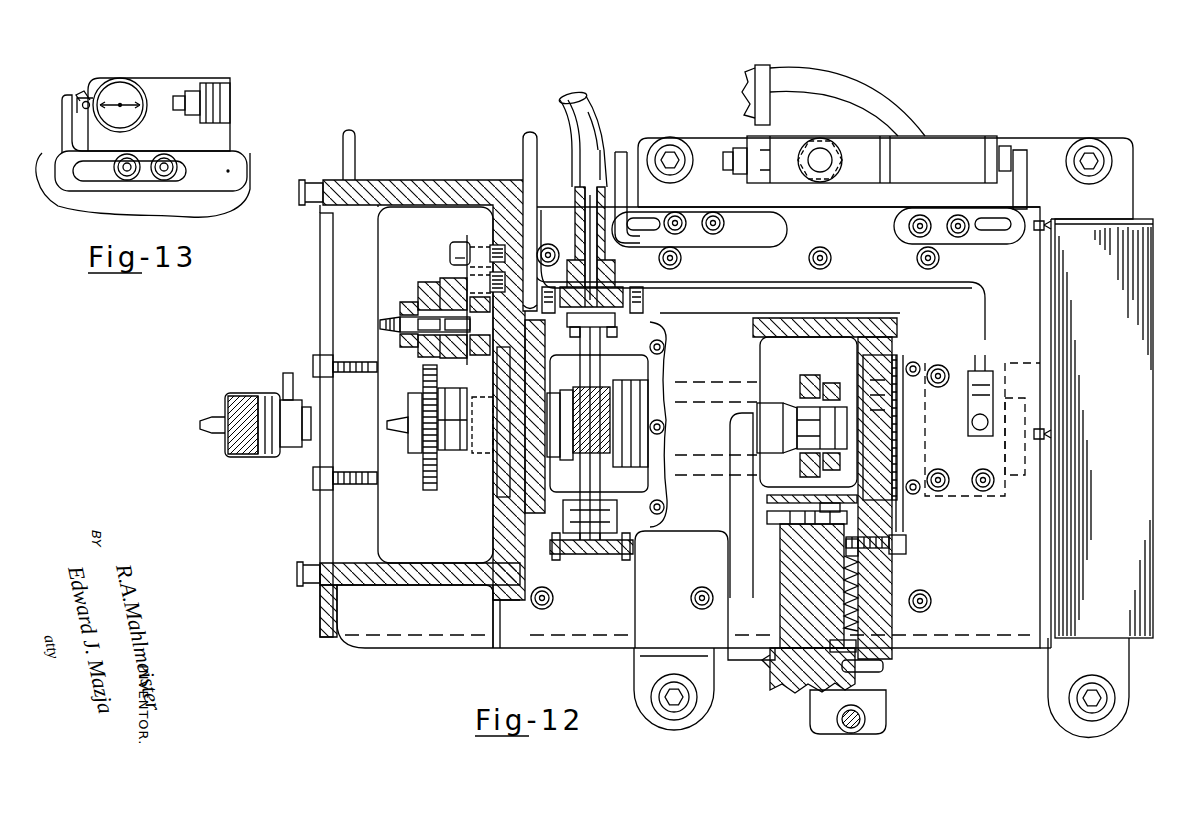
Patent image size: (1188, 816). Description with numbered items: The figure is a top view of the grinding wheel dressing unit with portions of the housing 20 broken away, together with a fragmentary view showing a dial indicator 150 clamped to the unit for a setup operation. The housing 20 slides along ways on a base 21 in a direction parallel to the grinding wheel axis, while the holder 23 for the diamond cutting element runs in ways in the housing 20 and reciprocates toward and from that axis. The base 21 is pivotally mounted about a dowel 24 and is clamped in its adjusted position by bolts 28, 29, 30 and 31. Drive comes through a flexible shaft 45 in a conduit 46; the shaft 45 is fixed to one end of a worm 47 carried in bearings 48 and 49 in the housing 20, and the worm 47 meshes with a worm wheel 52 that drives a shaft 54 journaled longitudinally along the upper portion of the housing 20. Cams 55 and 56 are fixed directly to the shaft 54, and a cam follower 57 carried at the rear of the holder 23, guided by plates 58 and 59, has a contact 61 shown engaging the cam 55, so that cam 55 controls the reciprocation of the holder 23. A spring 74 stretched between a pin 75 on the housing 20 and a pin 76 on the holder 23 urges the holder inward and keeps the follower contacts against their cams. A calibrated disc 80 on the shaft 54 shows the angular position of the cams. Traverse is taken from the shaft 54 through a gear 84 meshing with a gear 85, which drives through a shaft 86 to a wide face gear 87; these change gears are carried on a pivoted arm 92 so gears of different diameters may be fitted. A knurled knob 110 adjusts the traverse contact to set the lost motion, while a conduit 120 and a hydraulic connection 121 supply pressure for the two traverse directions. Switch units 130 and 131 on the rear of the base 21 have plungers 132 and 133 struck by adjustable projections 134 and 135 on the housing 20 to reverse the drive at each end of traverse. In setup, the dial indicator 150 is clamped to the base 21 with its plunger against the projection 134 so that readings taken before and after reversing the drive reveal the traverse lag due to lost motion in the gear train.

In FIG. 12, the housing 20 is at (470, 180).
In FIG. 12, the base 21 is at (1142, 300).
In FIG. 12, the holder 23 is at (778, 692).
In FIG. 12, the dowel 24 is at (851, 733).
In FIG. 12, the bolt 28 is at (672, 700).
In FIG. 12, the bolt 29 is at (1092, 700).
In FIG. 12, the bolt 30 is at (1088, 150).
In FIG. 12, the bolt 31 is at (885, 163).
In FIG. 12, the flexible shaft 45 is at (578, 195).
In FIG. 12, the conduit 46 is at (578, 92).
In FIG. 12, the worm 47 is at (585, 386).
In FIG. 12, the bearing 48 is at (626, 380).
In FIG. 12, the bearing 49 is at (610, 502).
In FIG. 12, the worm wheel 52 is at (575, 455).
In FIG. 12, the shaft 54 is at (765, 410).
In FIG. 12, the cam 55 is at (808, 375).
In FIG. 12, the cam 56 is at (832, 383).
In FIG. 12, the cam follower 57 is at (828, 503).
In FIG. 12, the plate 58 is at (767, 498).
In FIG. 12, the plate 59 is at (860, 492).
In FIG. 12, the follower contact 61 is at (767, 517).
In FIG. 12, the spring 74 is at (852, 582).
In FIG. 12, the pin 75 is at (906, 545).
In FIG. 12, the pin 76 is at (883, 666).
In FIG. 12, the calibrated disc 80 is at (493, 490).
In FIG. 12, the gear 84 is at (427, 482).
In FIG. 12, the gear 85 is at (418, 305).
In FIG. 12, the shaft 86 is at (392, 318).
In FIG. 12, the wide face gear 87 is at (455, 290).
In FIG. 12, the arm 92 is at (478, 386).
In FIG. 12, the knurled knob 110 is at (244, 393).
In FIG. 12, the conduit 120 is at (341, 150).
In FIG. 12, the hydraulic connection 121 is at (722, 282).
In FIG. 12, the switch unit 130 is at (850, 136).
In FIG. 12, the switch unit 131 is at (945, 138).
In FIG. 12, the plunger 132 is at (728, 150).
In FIG. 12, the plunger 133 is at (1006, 146).
In FIG. 13, the adjustable projection 134 is at (68, 112).
In FIG. 12, the adjustable projection 134 is at (621, 150).
In FIG. 12, the adjustable projection 135 is at (1022, 165).
In FIG. 13, the dial indicator 150 is at (121, 89).